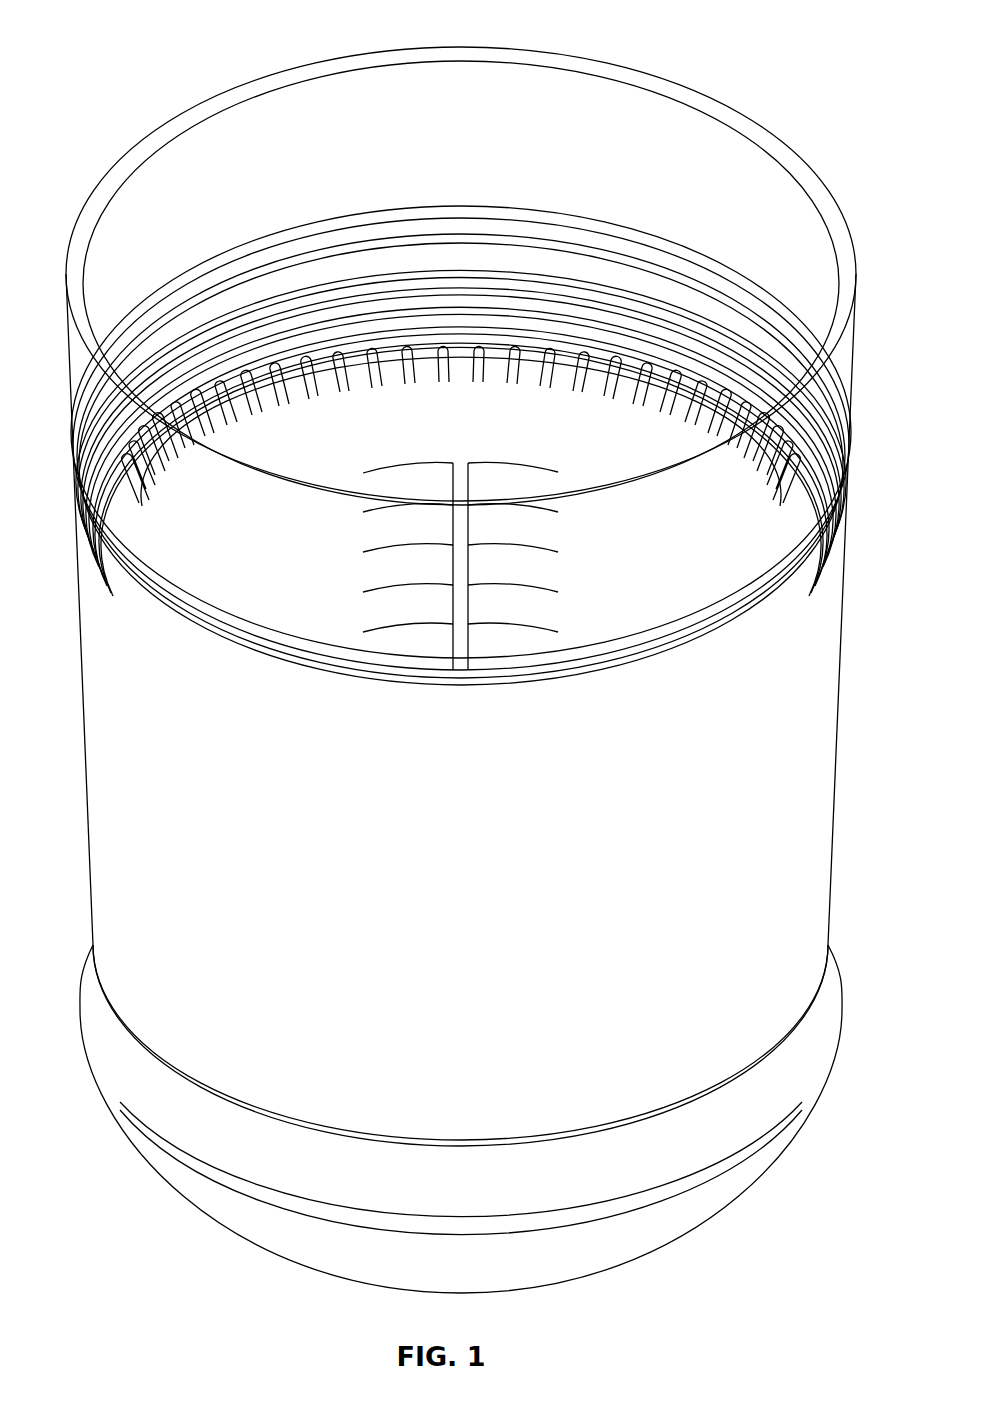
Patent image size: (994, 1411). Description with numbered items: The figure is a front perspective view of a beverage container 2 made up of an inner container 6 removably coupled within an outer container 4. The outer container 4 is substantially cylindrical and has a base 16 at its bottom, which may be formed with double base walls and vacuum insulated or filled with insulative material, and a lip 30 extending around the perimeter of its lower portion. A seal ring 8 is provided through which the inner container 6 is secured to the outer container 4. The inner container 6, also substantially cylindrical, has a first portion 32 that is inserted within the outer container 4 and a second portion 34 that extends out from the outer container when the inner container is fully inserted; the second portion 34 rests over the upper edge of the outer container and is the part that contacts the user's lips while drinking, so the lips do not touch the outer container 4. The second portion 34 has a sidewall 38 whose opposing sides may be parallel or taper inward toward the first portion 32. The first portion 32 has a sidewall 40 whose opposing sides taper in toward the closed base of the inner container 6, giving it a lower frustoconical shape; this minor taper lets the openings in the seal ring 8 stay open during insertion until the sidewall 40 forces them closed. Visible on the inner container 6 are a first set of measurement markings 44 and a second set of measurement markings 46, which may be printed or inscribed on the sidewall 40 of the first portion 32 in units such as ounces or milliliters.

The beverage container 2 is at (102, 79).
The outer container 4 is at (818, 748).
The inner container 6 is at (815, 224).
The seal ring 8 is at (530, 373).
The base 16 is at (642, 1268).
The lip 30 is at (823, 1045).
The first portion 32 is at (443, 405).
The second portion 34 is at (735, 142).
The sidewall 38 is at (600, 107).
The sidewall 40 is at (273, 443).
The first set of measurement markings 44 is at (393, 465).
The second set of measurement markings 46 is at (537, 588).